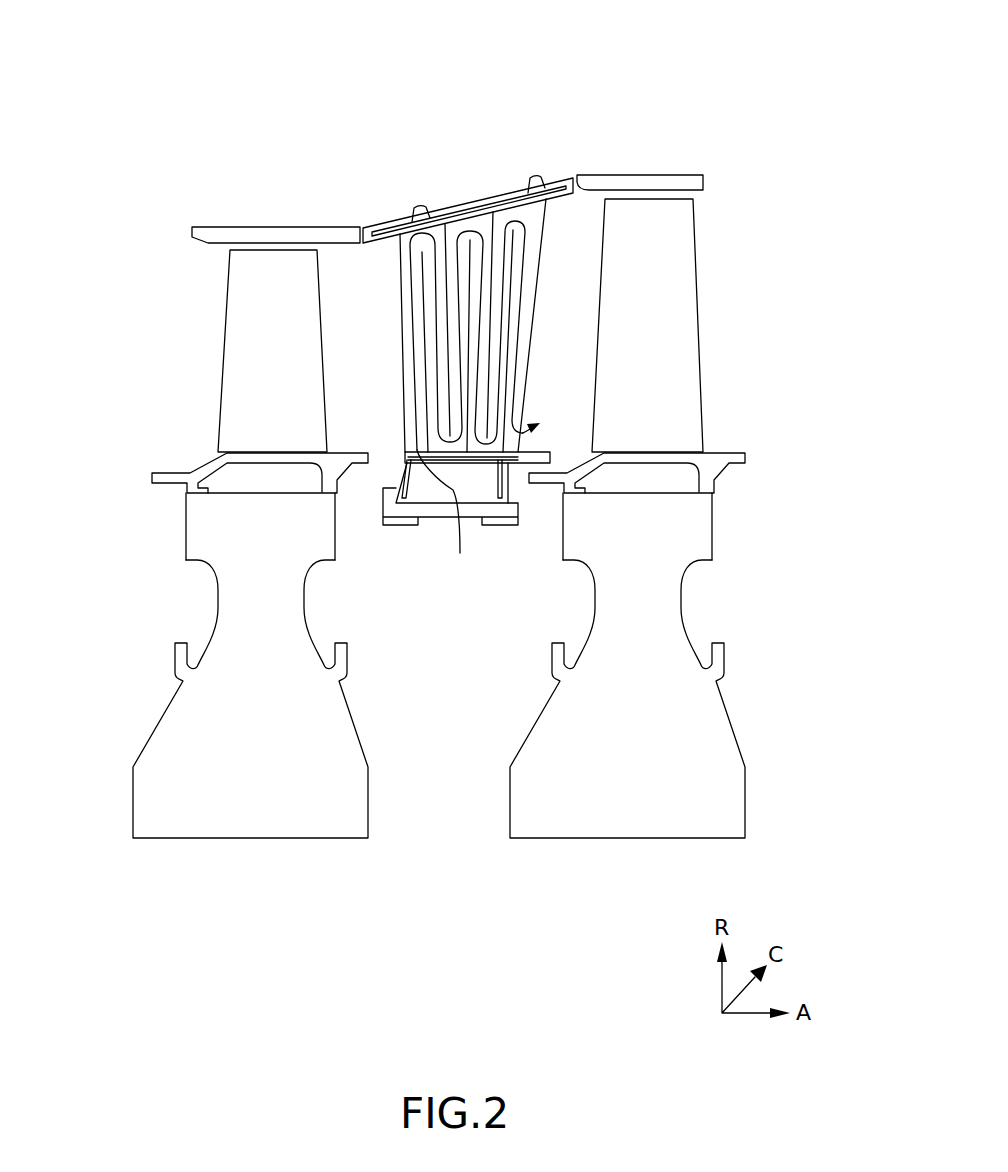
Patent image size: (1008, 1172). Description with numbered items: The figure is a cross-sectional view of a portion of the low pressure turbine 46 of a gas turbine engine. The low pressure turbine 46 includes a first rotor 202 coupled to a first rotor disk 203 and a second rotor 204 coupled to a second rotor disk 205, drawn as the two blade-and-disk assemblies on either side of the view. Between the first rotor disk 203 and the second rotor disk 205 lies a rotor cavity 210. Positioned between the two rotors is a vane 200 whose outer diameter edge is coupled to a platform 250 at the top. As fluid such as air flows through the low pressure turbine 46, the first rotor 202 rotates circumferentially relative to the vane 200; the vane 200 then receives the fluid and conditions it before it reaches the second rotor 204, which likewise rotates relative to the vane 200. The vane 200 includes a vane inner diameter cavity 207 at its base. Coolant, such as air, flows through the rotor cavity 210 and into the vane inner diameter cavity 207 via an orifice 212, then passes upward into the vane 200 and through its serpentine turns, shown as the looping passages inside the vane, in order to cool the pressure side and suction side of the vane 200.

The low pressure turbine 46 is at (772, 107).
The vane 200 is at (400, 268).
The first rotor 202 is at (218, 378).
The first rotor disk 203 is at (133, 797).
The second rotor 204 is at (705, 388).
The second rotor disk 205 is at (745, 790).
The vane inner diameter cavity 207 is at (423, 493).
The rotor cavity 210 is at (383, 720).
The orifice 212 is at (447, 514).
The platform 250 is at (561, 193).